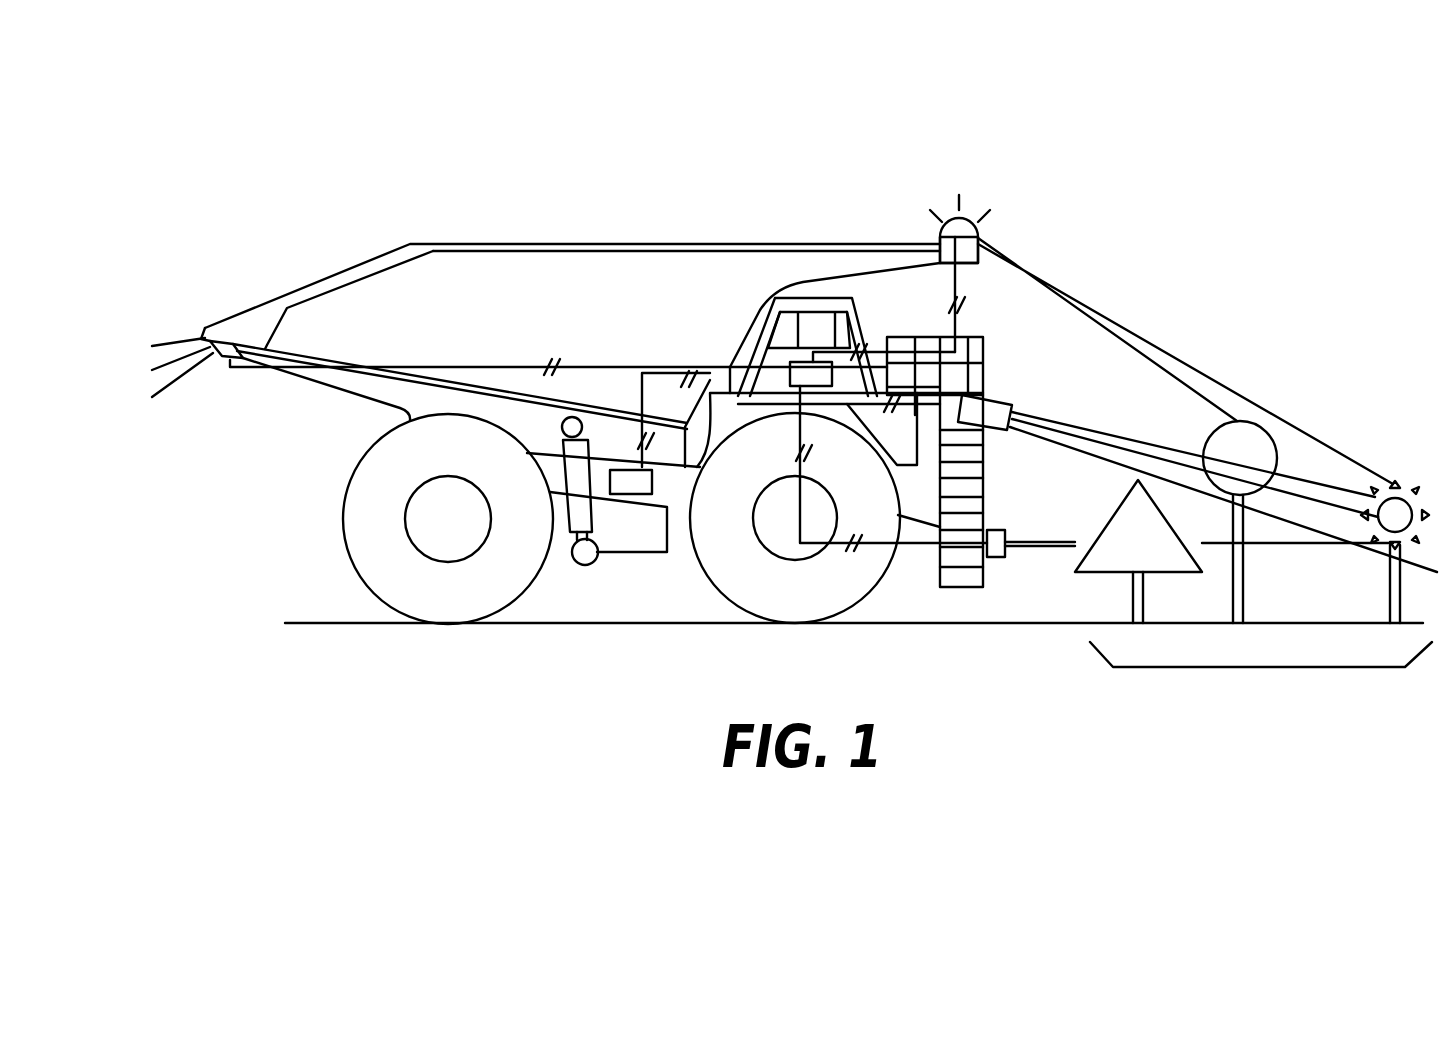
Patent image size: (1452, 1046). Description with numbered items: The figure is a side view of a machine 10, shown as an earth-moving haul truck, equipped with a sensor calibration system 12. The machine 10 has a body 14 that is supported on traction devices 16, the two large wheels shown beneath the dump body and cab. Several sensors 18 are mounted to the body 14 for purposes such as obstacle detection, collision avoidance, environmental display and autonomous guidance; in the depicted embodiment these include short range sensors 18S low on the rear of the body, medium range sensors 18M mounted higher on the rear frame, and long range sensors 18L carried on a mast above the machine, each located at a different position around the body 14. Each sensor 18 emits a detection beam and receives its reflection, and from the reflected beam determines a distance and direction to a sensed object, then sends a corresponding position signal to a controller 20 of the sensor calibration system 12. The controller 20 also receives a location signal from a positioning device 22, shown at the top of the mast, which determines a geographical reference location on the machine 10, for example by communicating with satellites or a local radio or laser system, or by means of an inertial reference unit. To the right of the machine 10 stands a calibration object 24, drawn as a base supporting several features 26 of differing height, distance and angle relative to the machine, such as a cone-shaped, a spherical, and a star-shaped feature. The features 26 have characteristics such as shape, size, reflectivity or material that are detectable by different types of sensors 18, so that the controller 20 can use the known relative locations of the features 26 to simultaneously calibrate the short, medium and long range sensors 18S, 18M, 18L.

The machine 10 is at (292, 545).
The sensor calibration system 12 is at (1217, 231).
The body 14 is at (602, 316).
The traction devices 16 is at (707, 570).
The sensors 18 is at (222, 352).
The long range sensors 18L is at (970, 257).
The medium range sensors 18M is at (995, 406).
The short range sensors 18S is at (998, 548).
The controller 20 is at (800, 371).
The positioning device 22 is at (953, 227).
The calibration object 24 is at (1258, 670).
The features 26 is at (1130, 533).